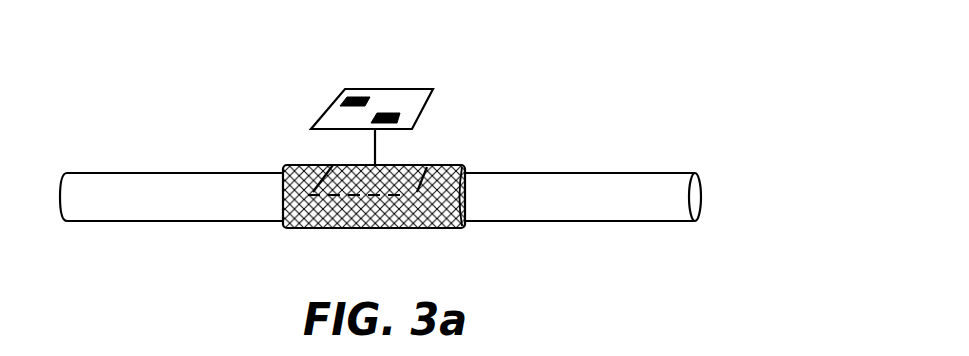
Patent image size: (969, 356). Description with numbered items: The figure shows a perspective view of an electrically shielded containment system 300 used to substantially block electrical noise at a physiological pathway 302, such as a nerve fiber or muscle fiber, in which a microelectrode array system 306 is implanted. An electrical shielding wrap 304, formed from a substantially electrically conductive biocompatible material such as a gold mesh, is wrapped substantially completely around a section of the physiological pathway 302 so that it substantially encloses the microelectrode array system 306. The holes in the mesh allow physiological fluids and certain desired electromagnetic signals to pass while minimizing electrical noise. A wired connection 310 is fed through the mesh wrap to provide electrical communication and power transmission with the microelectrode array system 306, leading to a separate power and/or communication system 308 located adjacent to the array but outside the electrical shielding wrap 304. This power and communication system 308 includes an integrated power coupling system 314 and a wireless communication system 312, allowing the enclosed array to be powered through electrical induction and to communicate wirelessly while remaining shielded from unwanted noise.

The electrically shielded containment system 300 is at (147, 89).
The physiological pathway 302 is at (84, 204).
The electrical shielding wrap 304 is at (278, 163).
The microelectrode array system 306 is at (407, 195).
The power and/or communication system 308 is at (416, 89).
The wired connection 310 is at (375, 146).
The wireless communication system 312 is at (400, 113).
The integrated power coupling system 314 is at (343, 92).